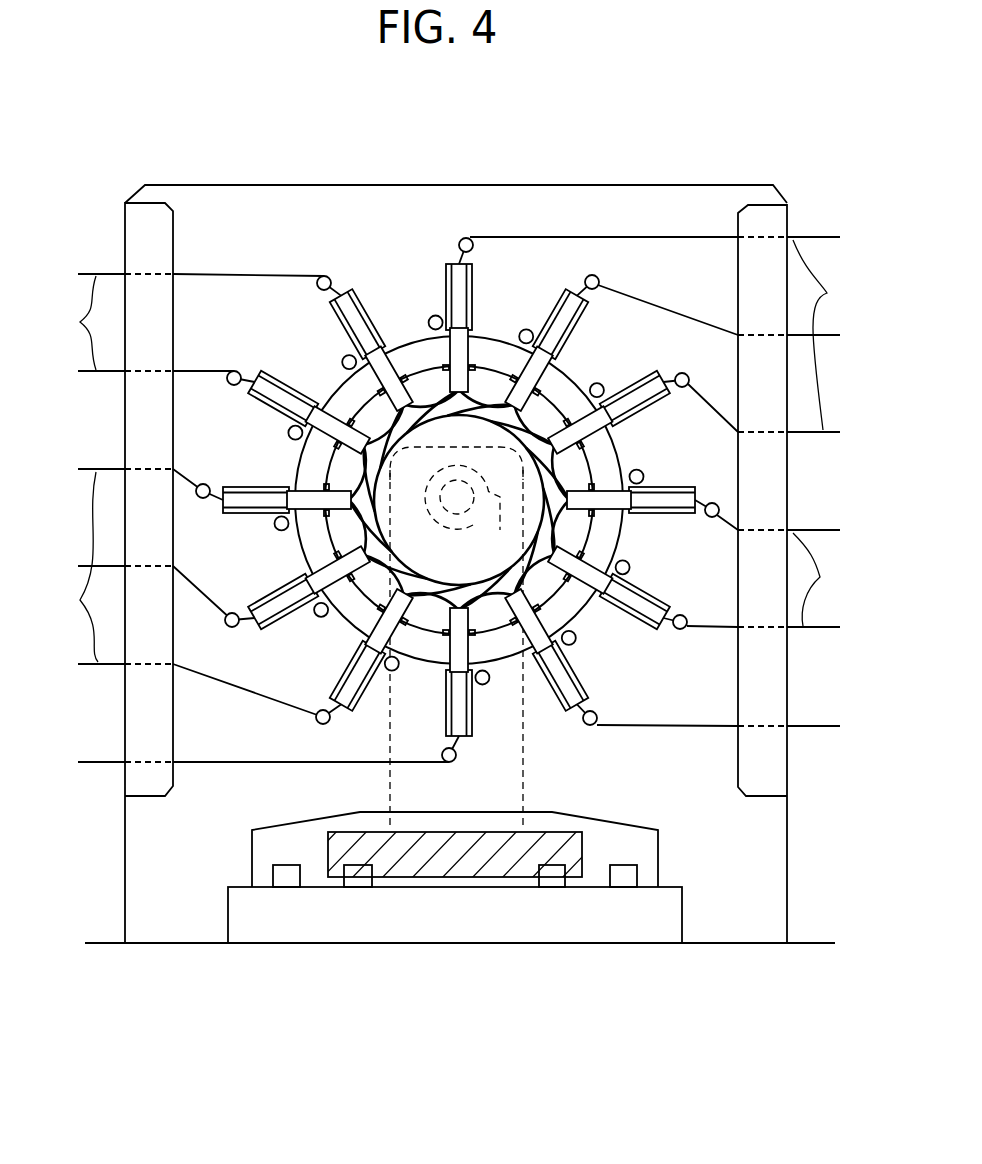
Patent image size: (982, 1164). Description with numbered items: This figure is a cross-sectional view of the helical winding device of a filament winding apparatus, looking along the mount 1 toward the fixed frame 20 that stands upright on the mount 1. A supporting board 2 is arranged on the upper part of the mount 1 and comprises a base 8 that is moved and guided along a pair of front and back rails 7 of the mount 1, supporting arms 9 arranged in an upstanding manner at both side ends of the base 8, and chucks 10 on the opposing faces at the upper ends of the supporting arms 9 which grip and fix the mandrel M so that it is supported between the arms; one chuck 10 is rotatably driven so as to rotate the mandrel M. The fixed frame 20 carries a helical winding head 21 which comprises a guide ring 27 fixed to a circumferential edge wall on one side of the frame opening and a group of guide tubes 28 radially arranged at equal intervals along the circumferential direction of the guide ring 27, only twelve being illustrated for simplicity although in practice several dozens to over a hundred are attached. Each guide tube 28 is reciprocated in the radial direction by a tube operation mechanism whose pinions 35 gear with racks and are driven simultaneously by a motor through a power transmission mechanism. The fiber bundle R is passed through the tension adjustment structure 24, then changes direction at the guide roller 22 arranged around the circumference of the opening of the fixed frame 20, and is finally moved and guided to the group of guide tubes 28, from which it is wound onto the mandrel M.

The mount 1 is at (430, 945).
The supporting board 2 is at (465, 872).
The rails 7 is at (357, 888).
The base 8 is at (566, 830).
The supporting arms 9 is at (389, 790).
The chucks 10 is at (470, 511).
The mandrel M is at (447, 564).
The fixed frame 20 is at (125, 860).
The helical winding head 21 is at (380, 261).
The guide roller 22 is at (316, 286).
The tension adjustment structure 24 is at (125, 428).
The guide ring 27 is at (578, 382).
The guide tubes 28 is at (340, 405).
The pinion 35 is at (433, 316).
The fiber bundle R is at (454, 451).